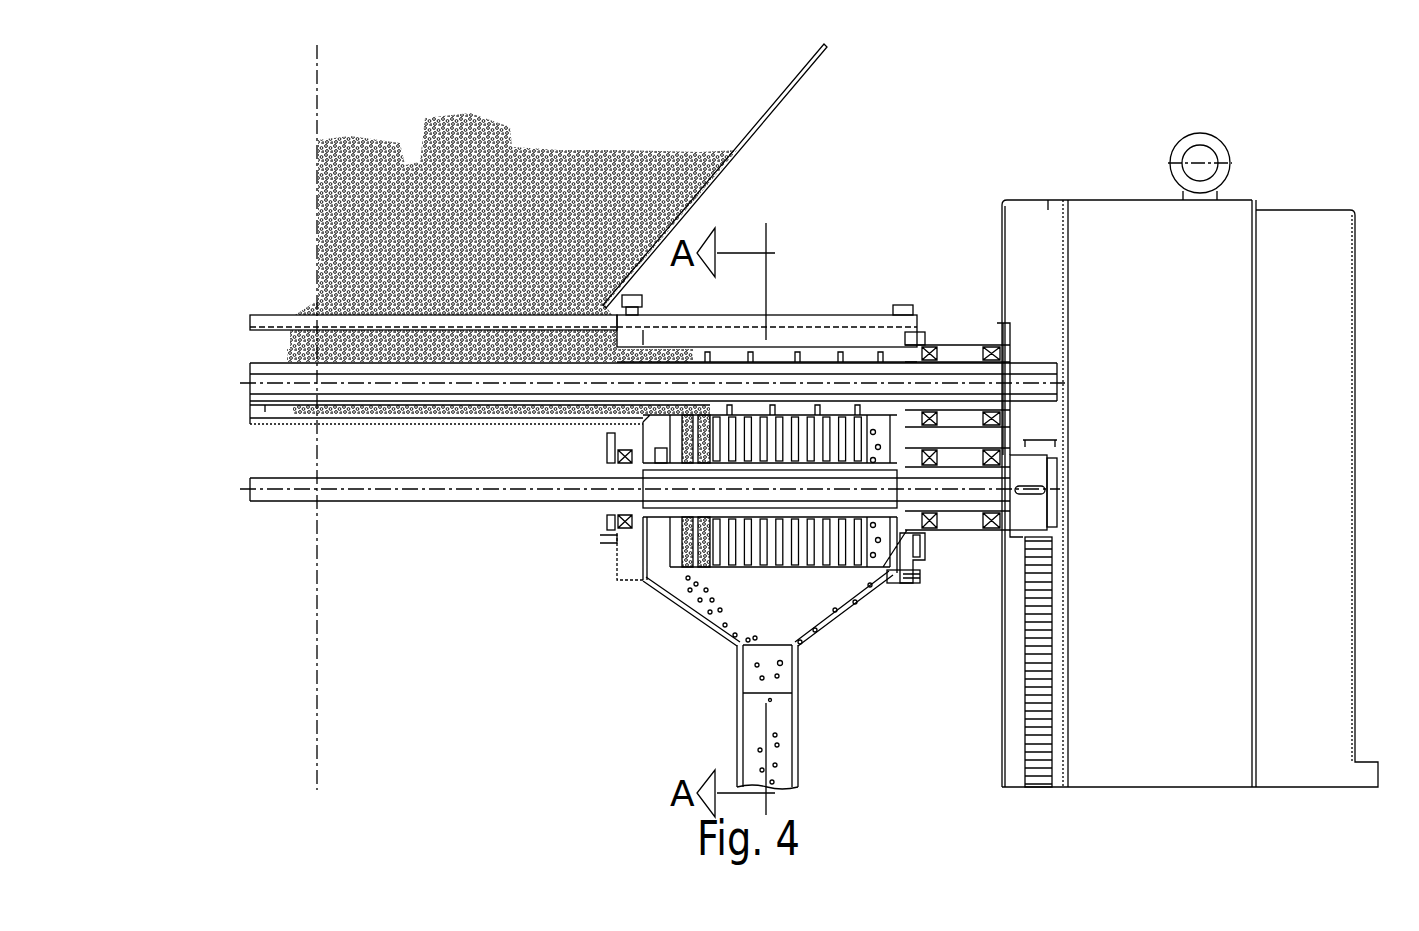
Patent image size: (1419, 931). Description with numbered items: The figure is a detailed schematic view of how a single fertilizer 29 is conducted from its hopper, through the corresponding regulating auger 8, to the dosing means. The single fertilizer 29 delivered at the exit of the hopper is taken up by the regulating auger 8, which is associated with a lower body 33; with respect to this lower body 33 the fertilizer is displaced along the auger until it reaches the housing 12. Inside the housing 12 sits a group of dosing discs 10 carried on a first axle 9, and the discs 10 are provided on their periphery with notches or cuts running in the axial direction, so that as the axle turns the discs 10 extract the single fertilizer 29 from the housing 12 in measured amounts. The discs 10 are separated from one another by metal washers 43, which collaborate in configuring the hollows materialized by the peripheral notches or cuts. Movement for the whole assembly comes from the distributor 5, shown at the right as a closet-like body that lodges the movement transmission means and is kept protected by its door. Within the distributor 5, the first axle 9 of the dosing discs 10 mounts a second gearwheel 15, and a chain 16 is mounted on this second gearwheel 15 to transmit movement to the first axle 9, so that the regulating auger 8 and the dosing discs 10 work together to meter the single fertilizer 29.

The distributor 5 is at (1254, 209).
The regulating auger 8 is at (290, 363).
The first axle 9 is at (290, 490).
The dosing discs 10 is at (718, 533).
The housing 12 is at (708, 620).
The second gearwheel 15 is at (1035, 452).
The chain 16 is at (1040, 697).
The single fertilizer 29 is at (372, 197).
The lower body 33 is at (293, 422).
The metal washers 43 is at (775, 440).